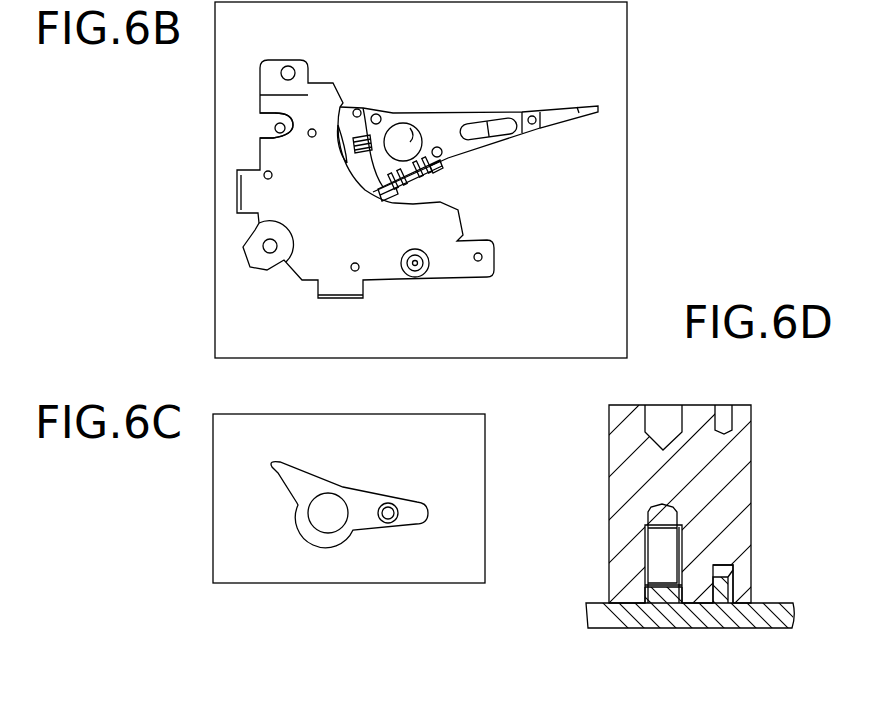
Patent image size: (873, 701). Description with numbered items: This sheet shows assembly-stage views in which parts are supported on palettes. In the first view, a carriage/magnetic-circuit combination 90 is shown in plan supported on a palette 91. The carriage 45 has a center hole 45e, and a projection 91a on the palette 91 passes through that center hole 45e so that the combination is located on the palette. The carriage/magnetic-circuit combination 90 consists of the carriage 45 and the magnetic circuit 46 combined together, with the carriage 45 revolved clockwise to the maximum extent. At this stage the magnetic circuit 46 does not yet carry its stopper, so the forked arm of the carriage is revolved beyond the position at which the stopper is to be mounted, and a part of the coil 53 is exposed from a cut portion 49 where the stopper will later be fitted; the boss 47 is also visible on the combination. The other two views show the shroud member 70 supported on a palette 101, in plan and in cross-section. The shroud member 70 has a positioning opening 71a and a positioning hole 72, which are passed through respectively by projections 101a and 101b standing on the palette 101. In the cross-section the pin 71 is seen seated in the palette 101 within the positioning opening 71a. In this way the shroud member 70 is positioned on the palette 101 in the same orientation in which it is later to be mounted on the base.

In FIG. 6B, the palette 91 is at (633, 40).
In FIG. 6B, the projection 91a is at (398, 137).
In FIG. 6B, the carriage 45 is at (480, 110).
In FIG. 6B, the center hole 45e is at (410, 138).
In FIG. 6B, the magnetic circuit 46 is at (248, 234).
In FIG. 6B, the pivot boss 47 is at (415, 278).
In FIG. 6B, the cut portion 49 is at (262, 118).
In FIG. 6B, the coil 53 is at (268, 135).
In FIG. 6B, the carriage/magnetic-circuit combination 90 is at (237, 195).
In FIG. 6C, the shroud member 70 is at (303, 478).
In FIG. 6D, the shroud member 70 is at (752, 432).
In FIG. 6D, the pin 71 is at (650, 555).
In FIG. 6D, the positioning opening 71a is at (677, 600).
In FIG. 6D, the positioning hole 72 is at (723, 592).
In FIG. 6C, the palette 101 is at (486, 442).
In FIG. 6D, the palette 101 is at (768, 630).
In FIG. 6D, the projection 101a is at (660, 584).
In FIG. 6D, the projection 101b is at (728, 563).